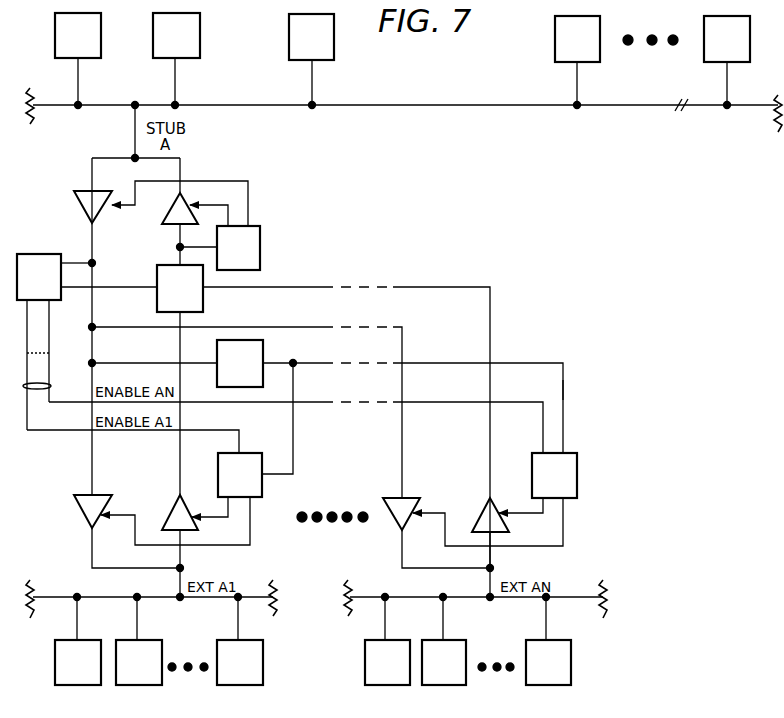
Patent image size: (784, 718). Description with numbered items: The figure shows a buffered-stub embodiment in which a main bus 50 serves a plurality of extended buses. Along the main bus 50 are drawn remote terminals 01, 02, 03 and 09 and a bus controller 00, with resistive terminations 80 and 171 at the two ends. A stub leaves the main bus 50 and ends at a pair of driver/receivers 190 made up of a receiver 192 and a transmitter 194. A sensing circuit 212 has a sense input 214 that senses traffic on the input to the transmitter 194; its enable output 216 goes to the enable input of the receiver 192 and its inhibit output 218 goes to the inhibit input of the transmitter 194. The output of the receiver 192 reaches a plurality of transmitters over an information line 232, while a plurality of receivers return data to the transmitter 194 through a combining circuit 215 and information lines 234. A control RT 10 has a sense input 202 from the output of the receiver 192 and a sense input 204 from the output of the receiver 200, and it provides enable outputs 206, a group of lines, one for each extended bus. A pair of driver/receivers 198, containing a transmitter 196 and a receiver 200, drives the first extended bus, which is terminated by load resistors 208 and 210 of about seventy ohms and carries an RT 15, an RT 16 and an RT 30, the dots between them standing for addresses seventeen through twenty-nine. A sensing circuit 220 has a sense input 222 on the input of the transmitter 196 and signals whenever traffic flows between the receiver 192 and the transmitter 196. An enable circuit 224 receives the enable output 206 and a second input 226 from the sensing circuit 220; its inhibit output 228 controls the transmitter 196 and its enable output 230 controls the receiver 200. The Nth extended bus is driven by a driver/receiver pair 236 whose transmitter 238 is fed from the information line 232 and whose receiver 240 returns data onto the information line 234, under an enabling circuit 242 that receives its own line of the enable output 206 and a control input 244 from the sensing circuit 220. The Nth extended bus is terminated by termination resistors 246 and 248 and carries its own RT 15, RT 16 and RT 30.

The main bus 50 is at (210, 103).
The bus terminator 80 is at (36, 118).
The bus terminator 171 is at (774, 122).
The remote terminal 01 is at (78, 52).
The remote terminal 02 is at (176, 52).
The bus controller 00 is at (311, 52).
The remote terminal 03 is at (577, 52).
The remote terminal 09 is at (727, 52).
The control RT 10 is at (39, 268).
The pair of driver/receivers 190 is at (71, 192).
The receiver 192 is at (74, 205).
The transmitter 194 is at (167, 212).
The transmitter 196 is at (74, 505).
The pair of driver/receivers 198 is at (67, 499).
The receiver 200 is at (172, 514).
The sense input 202 is at (77, 262).
The sense input 204 is at (94, 290).
The enable output 206 is at (50, 384).
The load resistor 208 is at (278, 597).
The load resistor 210 is at (36, 594).
The sensing circuit 212 is at (261, 248).
The sense input 214 is at (180, 246).
The combining circuit 215 is at (157, 299).
The enable output 216 is at (183, 166).
The inhibit output 218 is at (209, 207).
The sensing circuit 220 is at (265, 356).
The sense input 222 is at (122, 364).
The enable circuit 224 is at (255, 455).
The second input 226 is at (294, 453).
The inhibit output 228 is at (224, 546).
The enable output 230 is at (220, 518).
The information line 232 is at (266, 331).
The information lines 234 is at (290, 289).
The driver/receiver pair 236 is at (392, 531).
The transmitter 238 is at (390, 496).
The receiver 240 is at (478, 512).
The enabling circuit 242 is at (578, 458).
The control input 244 is at (565, 386).
The termination resistor 246 is at (604, 612).
The termination resistor 248 is at (342, 605).
The RT 15 is at (232, 654).
The RT 16 is at (292, 654).
The RT 30 is at (395, 654).